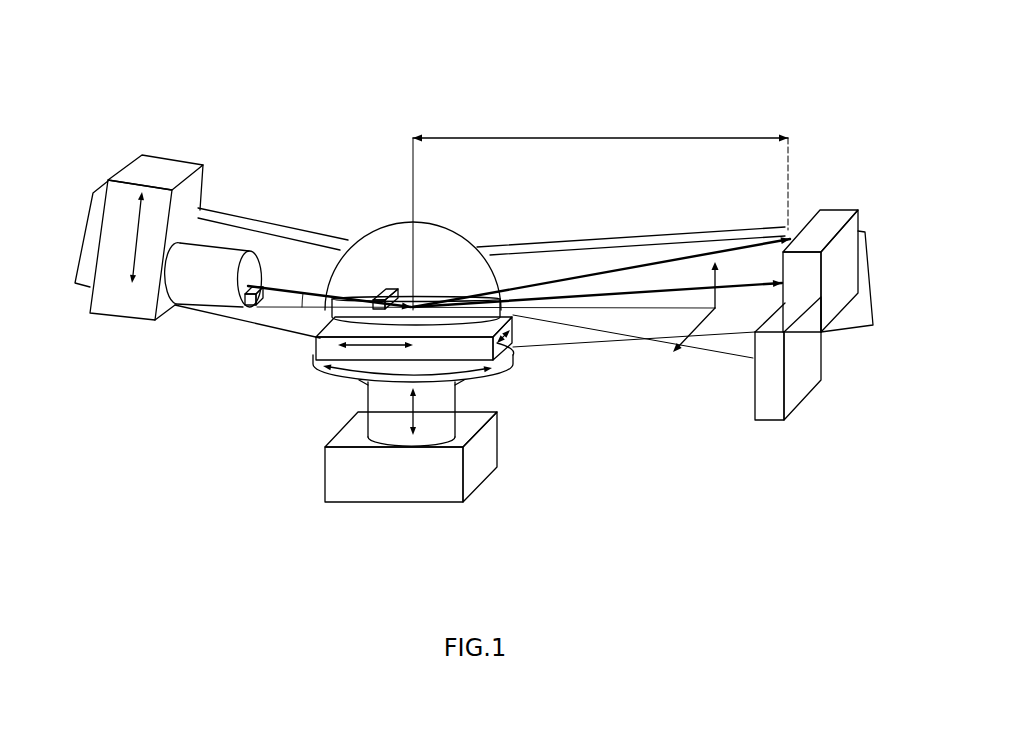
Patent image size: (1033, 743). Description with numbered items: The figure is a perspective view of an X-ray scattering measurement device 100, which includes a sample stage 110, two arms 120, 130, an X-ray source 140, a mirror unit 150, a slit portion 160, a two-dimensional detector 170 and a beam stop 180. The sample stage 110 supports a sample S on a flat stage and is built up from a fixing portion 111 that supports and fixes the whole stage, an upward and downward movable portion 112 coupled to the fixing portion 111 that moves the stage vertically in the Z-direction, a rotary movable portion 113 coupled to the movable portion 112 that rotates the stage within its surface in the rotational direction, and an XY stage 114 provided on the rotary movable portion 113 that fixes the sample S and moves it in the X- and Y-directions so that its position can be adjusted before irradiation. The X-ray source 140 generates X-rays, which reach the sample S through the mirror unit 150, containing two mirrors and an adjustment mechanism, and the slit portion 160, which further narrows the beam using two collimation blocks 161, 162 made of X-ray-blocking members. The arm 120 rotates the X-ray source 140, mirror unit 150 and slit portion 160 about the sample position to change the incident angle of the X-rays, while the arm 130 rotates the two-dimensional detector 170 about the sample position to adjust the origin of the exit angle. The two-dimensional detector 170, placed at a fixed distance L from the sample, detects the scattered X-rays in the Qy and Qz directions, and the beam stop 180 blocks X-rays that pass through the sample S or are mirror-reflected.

The X-ray scattering measurement device 100 is at (437, 68).
The sample stage 110 is at (535, 317).
The fixing portion 111 is at (325, 473).
The upward and downward movable portion 112 is at (368, 403).
The rotary movable portion 113 is at (313, 362).
The XY stage 114 is at (317, 338).
The arm 120 is at (240, 210).
The arm 130 is at (575, 239).
The X-ray source 140 is at (158, 155).
The mirror unit 150 is at (193, 308).
The slit portion 160 is at (393, 217).
The collimation block 161 is at (267, 278).
The collimation block 162 is at (388, 288).
The two-dimensional detector 170 is at (838, 209).
The beam stop 180 is at (775, 420).
The sample S is at (438, 294).